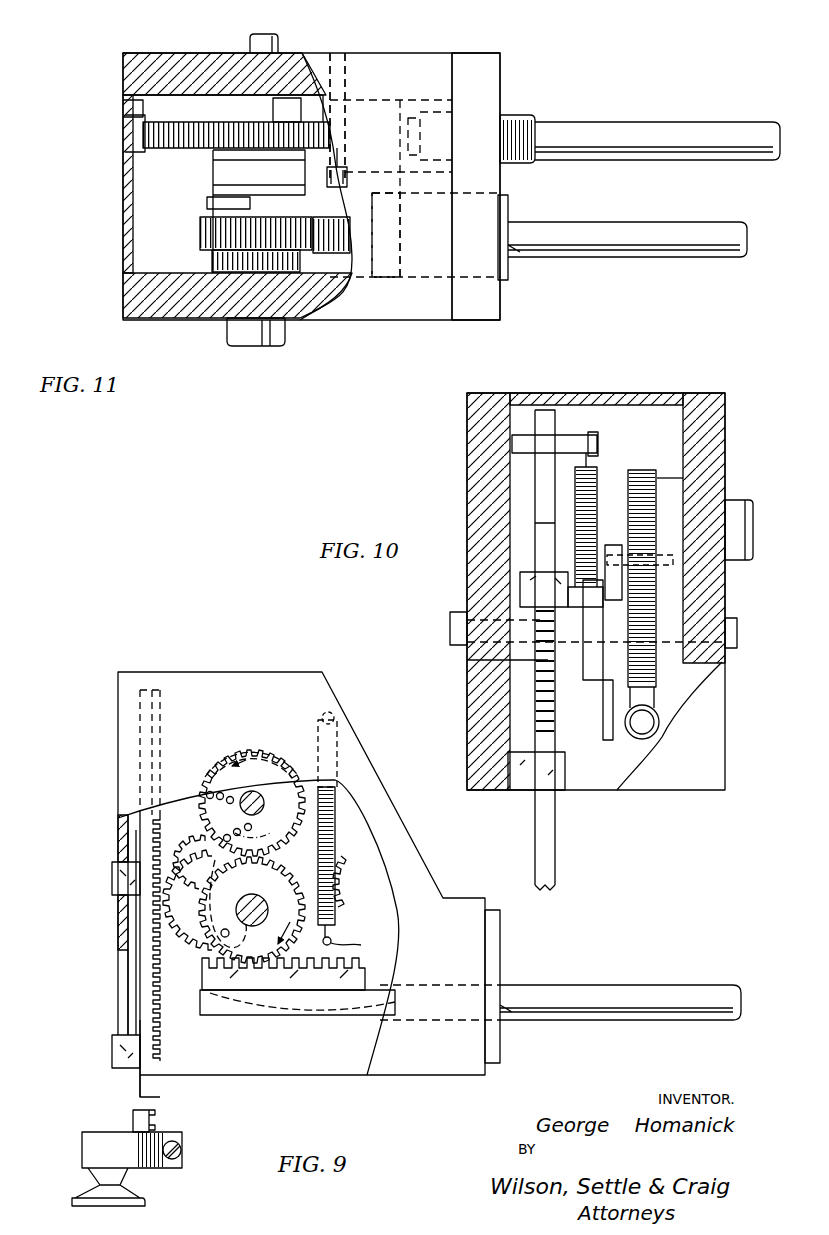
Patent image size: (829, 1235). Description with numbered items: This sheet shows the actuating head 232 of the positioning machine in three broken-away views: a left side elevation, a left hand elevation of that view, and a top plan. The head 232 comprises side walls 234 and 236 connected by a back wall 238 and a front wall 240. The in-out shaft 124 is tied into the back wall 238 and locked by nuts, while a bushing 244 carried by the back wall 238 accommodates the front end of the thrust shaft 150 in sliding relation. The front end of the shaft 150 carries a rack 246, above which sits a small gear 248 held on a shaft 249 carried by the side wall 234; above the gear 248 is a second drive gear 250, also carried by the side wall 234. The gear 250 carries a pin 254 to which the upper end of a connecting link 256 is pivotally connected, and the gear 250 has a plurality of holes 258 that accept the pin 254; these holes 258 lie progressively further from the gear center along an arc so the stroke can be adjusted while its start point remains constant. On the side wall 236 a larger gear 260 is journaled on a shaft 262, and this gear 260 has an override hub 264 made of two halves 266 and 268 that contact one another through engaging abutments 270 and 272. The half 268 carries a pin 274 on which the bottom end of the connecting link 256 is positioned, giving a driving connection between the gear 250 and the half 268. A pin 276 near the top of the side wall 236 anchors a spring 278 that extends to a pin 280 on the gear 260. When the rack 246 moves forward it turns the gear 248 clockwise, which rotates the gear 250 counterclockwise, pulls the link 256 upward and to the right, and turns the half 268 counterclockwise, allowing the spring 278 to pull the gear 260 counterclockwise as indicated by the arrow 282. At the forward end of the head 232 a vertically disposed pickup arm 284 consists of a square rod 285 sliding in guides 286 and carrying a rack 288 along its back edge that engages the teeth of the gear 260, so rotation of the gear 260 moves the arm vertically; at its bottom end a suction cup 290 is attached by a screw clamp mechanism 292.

In FIG. 11, the in-out rod 124 is at (590, 124).
In FIG. 11, the thrust rod 150 is at (629, 240).
In FIG. 9, the thrust rod 150 is at (616, 984).
In FIG. 9, the actuating head 232 is at (112, 672).
In FIG. 11, the side wall 234 is at (348, 326).
In FIG. 10, the side wall 234 is at (712, 370).
In FIG. 9, the side wall 234 is at (253, 671).
In FIG. 11, the side wall 236 is at (132, 67).
In FIG. 10, the side wall 236 is at (497, 368).
In FIG. 11, the back wall 238 is at (494, 85).
In FIG. 9, the front wall 240 is at (117, 828).
In FIG. 11, the bushing 244 is at (504, 204).
In FIG. 9, the bushing 244 is at (494, 957).
In FIG. 11, the rack 246 is at (343, 229).
In FIG. 9, the rack 246 is at (365, 977).
In FIG. 10, the small gear 248 is at (655, 687).
In FIG. 9, the small gear 248 is at (208, 934).
In FIG. 10, the shaft 249 is at (734, 641).
In FIG. 9, the shaft 249 is at (257, 899).
In FIG. 11, the second drive gear 250 is at (266, 250).
In FIG. 10, the second drive gear 250 is at (637, 471).
In FIG. 9, the second drive gear 250 is at (179, 806).
In FIG. 10, the pin 254 is at (680, 568).
In FIG. 11, the connecting link 256 is at (205, 222).
In FIG. 10, the connecting link 256 is at (612, 546).
In FIG. 9, the connecting link 256 is at (216, 868).
In FIG. 9, the holes 258 is at (258, 831).
In FIG. 11, the larger gear 260 is at (199, 122).
In FIG. 10, the larger gear 260 is at (551, 720).
In FIG. 9, the larger gear 260 is at (373, 917).
In FIG. 11, the shaft 262 is at (246, 44).
In FIG. 10, the shaft 262 is at (452, 625).
In FIG. 11, the override hub 264 is at (195, 152).
In FIG. 11, the half 266 is at (289, 132).
In FIG. 11, the half 268 is at (310, 188).
In FIG. 10, the engaging abutment 270 is at (588, 675).
In FIG. 10, the engaging abutment 272 is at (470, 676).
In FIG. 11, the pin 274 is at (207, 202).
In FIG. 10, the pin 274 is at (618, 708).
In FIG. 11, the pin 276 is at (333, 63).
In FIG. 10, the pin 276 is at (570, 445).
In FIG. 9, the pin 276 is at (320, 716).
In FIG. 11, the spring 278 is at (347, 179).
In FIG. 10, the spring 278 is at (580, 468).
In FIG. 9, the spring 278 is at (334, 856).
In FIG. 9, the pin 280 is at (342, 942).
In FIG. 9, the arrow 282 is at (192, 964).
In FIG. 9, the pickup arm 284 is at (113, 1110).
In FIG. 10, the square rod 285 is at (553, 839).
In FIG. 9, the square rod 285 is at (133, 1085).
In FIG. 9, the guides 286 is at (113, 882).
In FIG. 9, the rack 288 is at (158, 1047).
In FIG. 9, the suction cup 290 is at (75, 1202).
In FIG. 9, the screw clamp mechanism 292 is at (183, 1158).